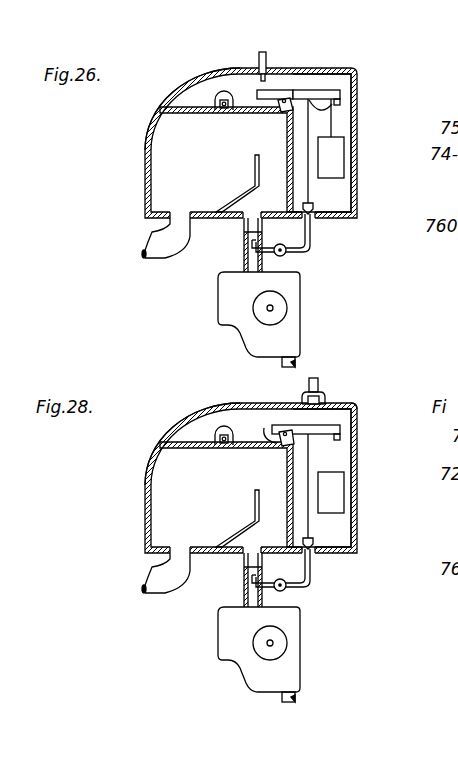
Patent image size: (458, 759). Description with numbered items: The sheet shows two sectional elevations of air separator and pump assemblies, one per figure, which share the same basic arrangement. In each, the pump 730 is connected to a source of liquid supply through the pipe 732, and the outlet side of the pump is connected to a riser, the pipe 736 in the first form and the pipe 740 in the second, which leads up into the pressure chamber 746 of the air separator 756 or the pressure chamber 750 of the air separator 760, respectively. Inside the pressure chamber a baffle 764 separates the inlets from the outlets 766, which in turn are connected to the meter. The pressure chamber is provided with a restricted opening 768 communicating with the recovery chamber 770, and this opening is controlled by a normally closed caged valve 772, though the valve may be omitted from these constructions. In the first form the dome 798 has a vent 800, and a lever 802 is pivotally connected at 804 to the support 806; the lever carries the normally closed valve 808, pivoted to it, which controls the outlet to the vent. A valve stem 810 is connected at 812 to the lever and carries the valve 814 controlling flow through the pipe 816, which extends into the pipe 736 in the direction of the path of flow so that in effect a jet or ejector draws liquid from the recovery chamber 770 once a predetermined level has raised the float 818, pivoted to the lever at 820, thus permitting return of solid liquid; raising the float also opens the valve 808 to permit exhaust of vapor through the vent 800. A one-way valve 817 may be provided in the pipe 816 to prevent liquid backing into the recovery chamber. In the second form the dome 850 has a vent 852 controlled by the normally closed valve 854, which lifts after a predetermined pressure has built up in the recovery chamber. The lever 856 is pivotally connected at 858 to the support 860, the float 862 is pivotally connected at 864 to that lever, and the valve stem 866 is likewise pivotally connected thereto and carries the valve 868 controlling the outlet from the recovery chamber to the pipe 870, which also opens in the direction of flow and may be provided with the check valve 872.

In FIG. 26, the pump 730 is at (288, 335).
In FIG. 28, the pump 730 is at (288, 649).
In FIG. 26, the pipe 732 is at (296, 363).
In FIG. 28, the pipe 732 is at (257, 706).
In FIG. 26, the pipe 736 is at (245, 257).
In FIG. 28, the pipe 740 is at (214, 582).
In FIG. 26, the pressure chamber 746 is at (148, 153).
In FIG. 28, the pressure chamber 750 is at (230, 478).
In FIG. 26, the air separator 756 is at (159, 120).
In FIG. 28, the air separator 760 is at (178, 444).
In FIG. 26, the baffle 764 is at (248, 191).
In FIG. 28, the baffle 764 is at (235, 518).
In FIG. 26, the outlets 766 is at (170, 215).
In FIG. 28, the outlets 766 is at (144, 572).
In FIG. 26, the restricted openings 768 is at (219, 114).
In FIG. 28, the restricted openings 768 is at (226, 494).
In FIG. 26, the recovery chamber 770 is at (350, 194).
In FIG. 28, the recovery chamber 770 is at (352, 478).
In FIG. 26, the caged valve 772 is at (223, 96).
In FIG. 28, the caged valve 772 is at (209, 407).
In FIG. 26, the dome 798 is at (286, 98).
In FIG. 26, the vent 800 is at (266, 62).
In FIG. 26, the lever 802 is at (322, 95).
In FIG. 26, the pivot 804 is at (298, 92).
In FIG. 26, the support 806 is at (279, 104).
In FIG. 26, the valve 808 is at (256, 66).
In FIG. 26, the valve stem 810 is at (310, 125).
In FIG. 26, the connection 812 is at (334, 112).
In FIG. 26, the valve 814 is at (316, 217).
In FIG. 26, the pipe 816 is at (292, 251).
In FIG. 26, the one-way valve 817 is at (285, 256).
In FIG. 26, the float 818 is at (332, 152).
In FIG. 26, the pivot 820 is at (338, 97).
In FIG. 28, the dome 850 is at (340, 392).
In FIG. 28, the vent 852 is at (327, 373).
In FIG. 28, the valve 854 is at (333, 387).
In FIG. 28, the lever 856 is at (373, 406).
In FIG. 28, the pivot 858 is at (270, 412).
In FIG. 28, the support 860 is at (251, 427).
In FIG. 28, the float 862 is at (361, 489).
In FIG. 28, the pivot 864 is at (333, 426).
In FIG. 28, the valve stem 866 is at (356, 486).
In FIG. 28, the valve 868 is at (352, 546).
In FIG. 28, the pipe 870 is at (310, 568).
In FIG. 28, the check valve 872 is at (321, 595).